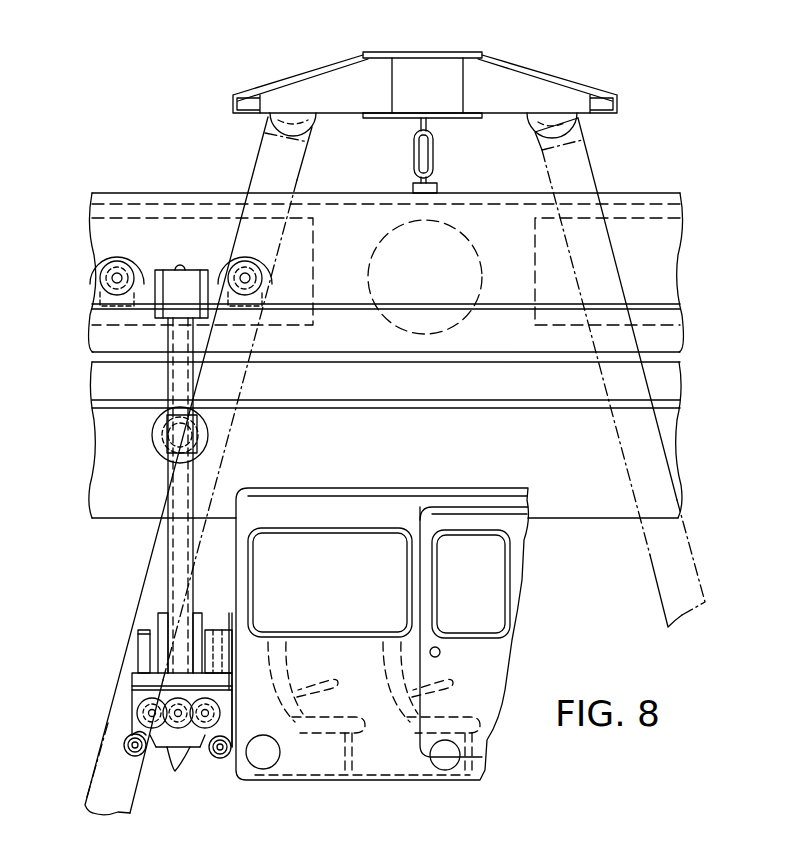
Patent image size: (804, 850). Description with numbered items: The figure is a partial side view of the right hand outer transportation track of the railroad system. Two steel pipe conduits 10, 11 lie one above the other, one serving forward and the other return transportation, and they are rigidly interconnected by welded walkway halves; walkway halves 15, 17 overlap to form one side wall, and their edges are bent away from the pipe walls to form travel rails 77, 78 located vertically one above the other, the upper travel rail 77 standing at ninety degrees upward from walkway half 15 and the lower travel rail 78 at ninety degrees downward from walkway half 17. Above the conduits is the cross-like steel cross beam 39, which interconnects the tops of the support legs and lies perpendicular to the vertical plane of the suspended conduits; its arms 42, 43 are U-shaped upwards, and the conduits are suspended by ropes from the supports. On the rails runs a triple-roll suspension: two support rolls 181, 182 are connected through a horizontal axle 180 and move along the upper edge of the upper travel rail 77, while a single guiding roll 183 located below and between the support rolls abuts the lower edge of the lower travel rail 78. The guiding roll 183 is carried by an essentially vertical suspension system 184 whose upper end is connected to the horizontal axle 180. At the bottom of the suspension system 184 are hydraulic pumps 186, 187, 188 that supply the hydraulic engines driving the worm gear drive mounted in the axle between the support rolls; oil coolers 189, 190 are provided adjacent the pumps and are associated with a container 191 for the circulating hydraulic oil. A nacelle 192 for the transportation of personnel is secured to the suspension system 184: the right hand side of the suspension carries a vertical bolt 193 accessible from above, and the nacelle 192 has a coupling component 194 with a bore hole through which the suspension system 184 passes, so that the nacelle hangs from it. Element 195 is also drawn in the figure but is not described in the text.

The pipe conduit 10 is at (653, 192).
The pipe conduit 11 is at (589, 511).
The walkway half 15 is at (665, 342).
The walkway half 17 is at (668, 382).
The travel rail 77 is at (660, 304).
The travel rail 78 is at (672, 403).
The cross beam 39 is at (425, 57).
The arm 42 is at (320, 95).
The arm 43 is at (556, 82).
The horizontal axle 180 is at (181, 275).
The support roll 181 is at (95, 262).
The support roll 182 is at (282, 267).
The guiding roll 183 is at (152, 432).
The suspension system 184 is at (168, 374).
The hydraulic pump 186 is at (135, 686).
The hydraulic pump 187 is at (198, 749).
The hydraulic pump 188 is at (205, 755).
The oil cooler 189 is at (130, 743).
The oil cooler 190 is at (223, 753).
The container 191 is at (168, 757).
The nacelle 192 is at (380, 767).
The vertical bolt 193 is at (212, 630).
The coupling component 194 is at (235, 646).
The stop block 195 is at (140, 637).